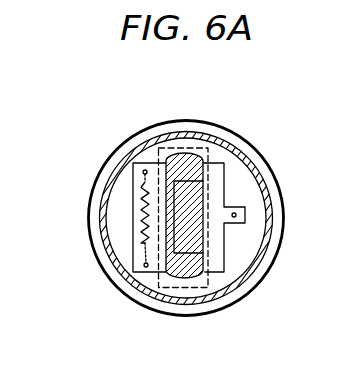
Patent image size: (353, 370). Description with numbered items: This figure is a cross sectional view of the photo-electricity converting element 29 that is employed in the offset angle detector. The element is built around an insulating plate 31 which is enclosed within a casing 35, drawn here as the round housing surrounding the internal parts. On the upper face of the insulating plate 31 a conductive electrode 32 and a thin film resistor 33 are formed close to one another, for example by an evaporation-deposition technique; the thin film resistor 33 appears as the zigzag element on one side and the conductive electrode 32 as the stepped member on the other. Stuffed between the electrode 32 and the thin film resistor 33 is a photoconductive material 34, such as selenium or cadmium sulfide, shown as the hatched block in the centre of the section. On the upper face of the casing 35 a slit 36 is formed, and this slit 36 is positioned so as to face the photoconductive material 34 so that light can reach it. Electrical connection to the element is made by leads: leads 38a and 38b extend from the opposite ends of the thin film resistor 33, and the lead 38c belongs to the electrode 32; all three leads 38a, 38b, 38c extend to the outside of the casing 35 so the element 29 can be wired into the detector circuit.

The photo-electricity converting element 29 is at (211, 114).
The insulating plate 31 is at (248, 252).
The conductive electrode 32 is at (218, 273).
The thin film resistor 33 is at (133, 198).
The photoconductive material 34 is at (200, 162).
The casing 35 is at (137, 298).
The slit 36 is at (142, 126).
The lead 38a is at (142, 172).
The lead 38b is at (144, 264).
The lead 38c is at (245, 207).